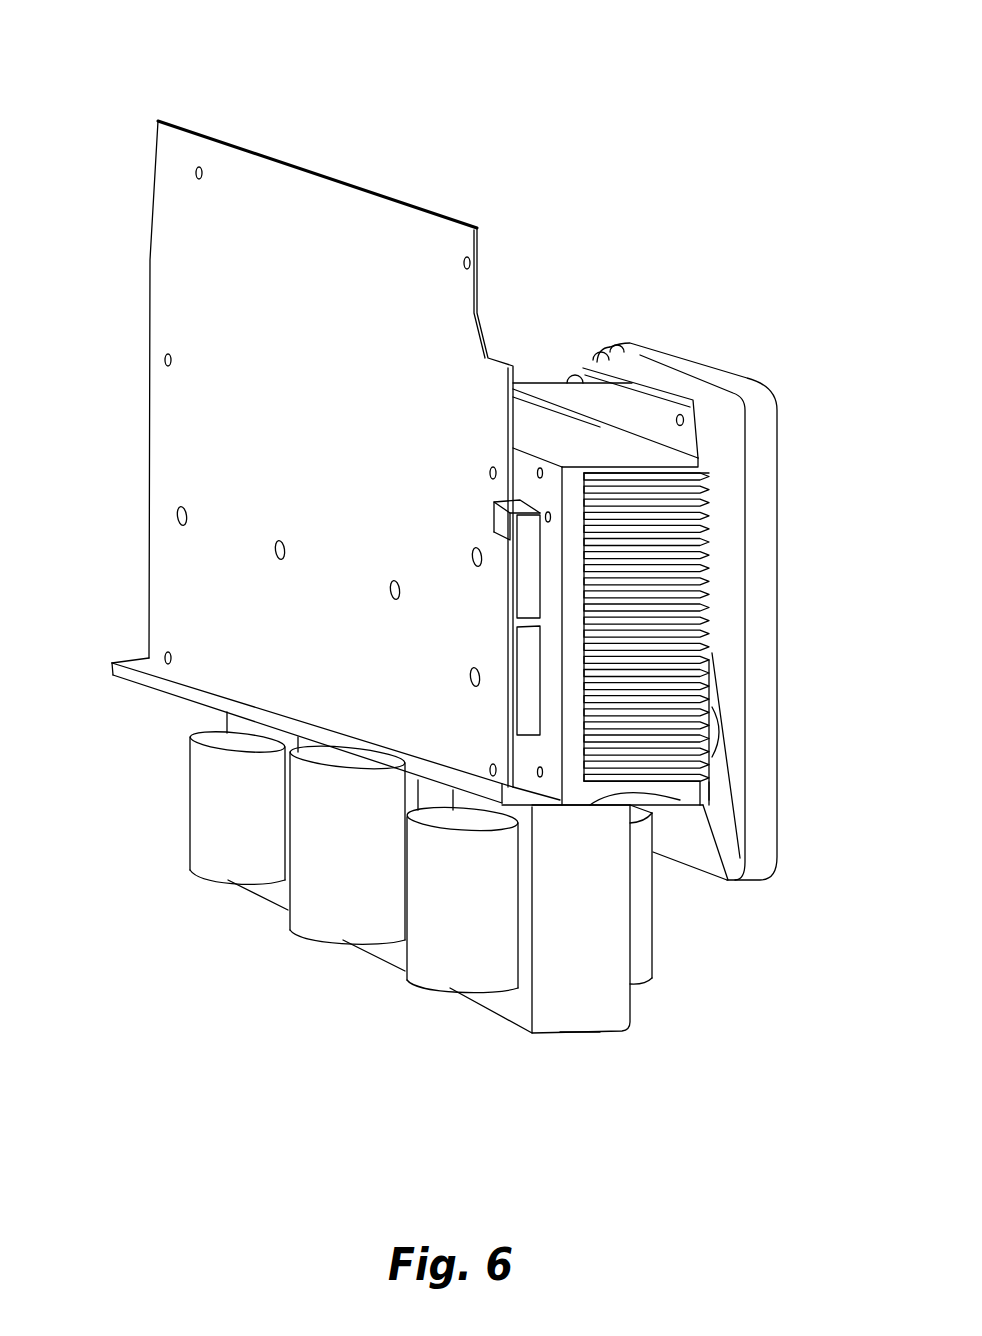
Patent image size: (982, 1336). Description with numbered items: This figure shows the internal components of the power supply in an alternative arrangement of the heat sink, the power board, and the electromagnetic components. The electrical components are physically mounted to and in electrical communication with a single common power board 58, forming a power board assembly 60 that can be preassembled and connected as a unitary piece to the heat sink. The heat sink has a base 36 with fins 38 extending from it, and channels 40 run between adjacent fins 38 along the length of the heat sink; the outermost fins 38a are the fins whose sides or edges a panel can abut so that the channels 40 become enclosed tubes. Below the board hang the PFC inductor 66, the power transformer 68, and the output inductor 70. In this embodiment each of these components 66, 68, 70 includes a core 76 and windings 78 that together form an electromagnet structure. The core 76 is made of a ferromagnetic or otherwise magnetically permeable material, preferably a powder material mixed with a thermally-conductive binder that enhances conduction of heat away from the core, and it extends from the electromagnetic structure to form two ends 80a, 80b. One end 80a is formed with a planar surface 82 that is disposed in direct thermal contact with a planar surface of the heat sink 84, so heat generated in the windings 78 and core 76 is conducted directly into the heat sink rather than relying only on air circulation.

The power board assembly 60 is at (366, 140).
The power board 58 is at (172, 258).
The base 36 is at (575, 485).
The fins 38 is at (708, 587).
The outermost fins 38a is at (614, 463).
The channels 40 is at (713, 645).
The heat sink 84 is at (715, 667).
The planar surface 82 is at (707, 790).
The end 80a is at (613, 833).
The end 80b is at (580, 1033).
The core 76 is at (620, 1010).
The windings 78 is at (487, 982).
The PFC inductor 66 is at (242, 868).
The power transformer 68 is at (350, 932).
The output inductor 70 is at (437, 980).